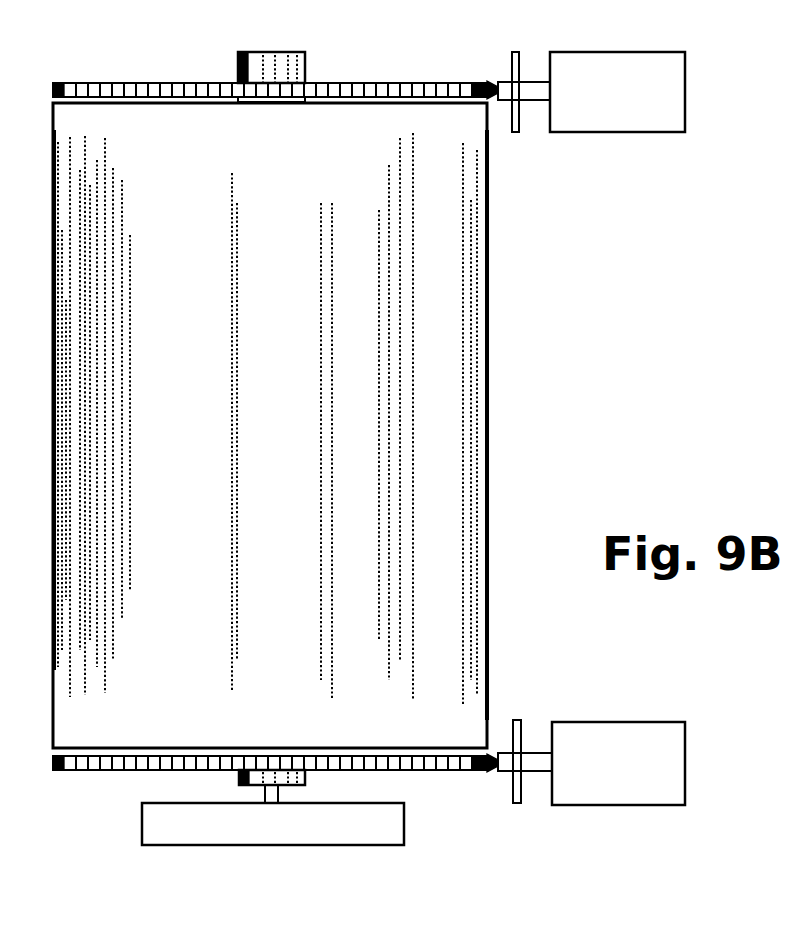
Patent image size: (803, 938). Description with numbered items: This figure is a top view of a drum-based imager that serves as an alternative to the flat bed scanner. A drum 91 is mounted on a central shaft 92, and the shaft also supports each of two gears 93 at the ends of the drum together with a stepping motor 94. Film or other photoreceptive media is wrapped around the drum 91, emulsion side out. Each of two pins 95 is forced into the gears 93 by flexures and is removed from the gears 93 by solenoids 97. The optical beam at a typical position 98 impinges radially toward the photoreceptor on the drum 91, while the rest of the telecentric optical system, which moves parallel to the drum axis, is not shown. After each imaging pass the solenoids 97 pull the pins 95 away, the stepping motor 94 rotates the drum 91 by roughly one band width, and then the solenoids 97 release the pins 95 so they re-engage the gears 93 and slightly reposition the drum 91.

The drum 91 is at (487, 225).
The central shaft 92 is at (400, 84).
The gears 93 is at (140, 83).
The stepping motor 94 is at (404, 815).
The pins 95 is at (493, 82).
The solenoids 97 is at (618, 52).
The typical position of the optical beam 98 is at (512, 361).